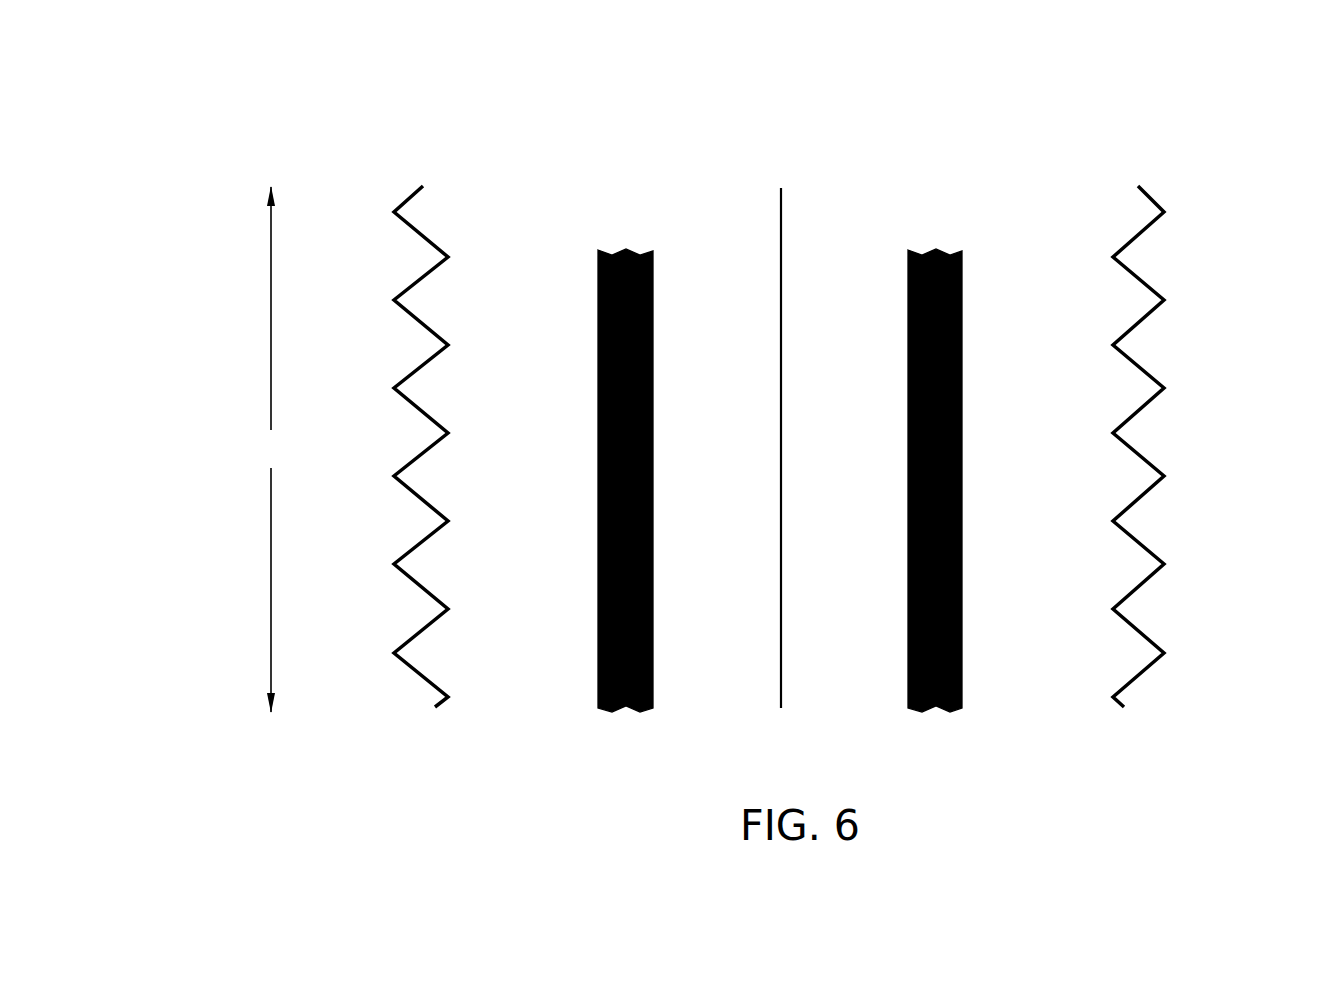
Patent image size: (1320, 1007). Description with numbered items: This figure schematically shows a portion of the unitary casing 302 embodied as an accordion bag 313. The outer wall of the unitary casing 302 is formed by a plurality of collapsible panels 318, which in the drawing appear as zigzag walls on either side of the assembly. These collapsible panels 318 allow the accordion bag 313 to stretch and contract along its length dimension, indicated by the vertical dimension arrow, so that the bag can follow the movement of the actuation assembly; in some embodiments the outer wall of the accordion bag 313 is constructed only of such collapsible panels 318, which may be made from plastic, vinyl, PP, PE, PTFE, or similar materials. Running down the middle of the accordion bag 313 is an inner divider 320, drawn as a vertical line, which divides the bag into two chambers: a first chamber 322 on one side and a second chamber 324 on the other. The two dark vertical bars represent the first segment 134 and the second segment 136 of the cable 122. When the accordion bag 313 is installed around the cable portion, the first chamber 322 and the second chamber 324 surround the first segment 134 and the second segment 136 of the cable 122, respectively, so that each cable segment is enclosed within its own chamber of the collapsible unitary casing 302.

The cable 122 is at (575, 804).
The first segment 134 is at (598, 685).
The second segment 136 is at (962, 683).
The unitary casing 302 is at (1260, 100).
The accordion bag 313 is at (82, 165).
The collapsible panels 318 is at (402, 382).
The inner divider 320 is at (781, 219).
The first chamber 322 is at (447, 90).
The second chamber 324 is at (1112, 91).